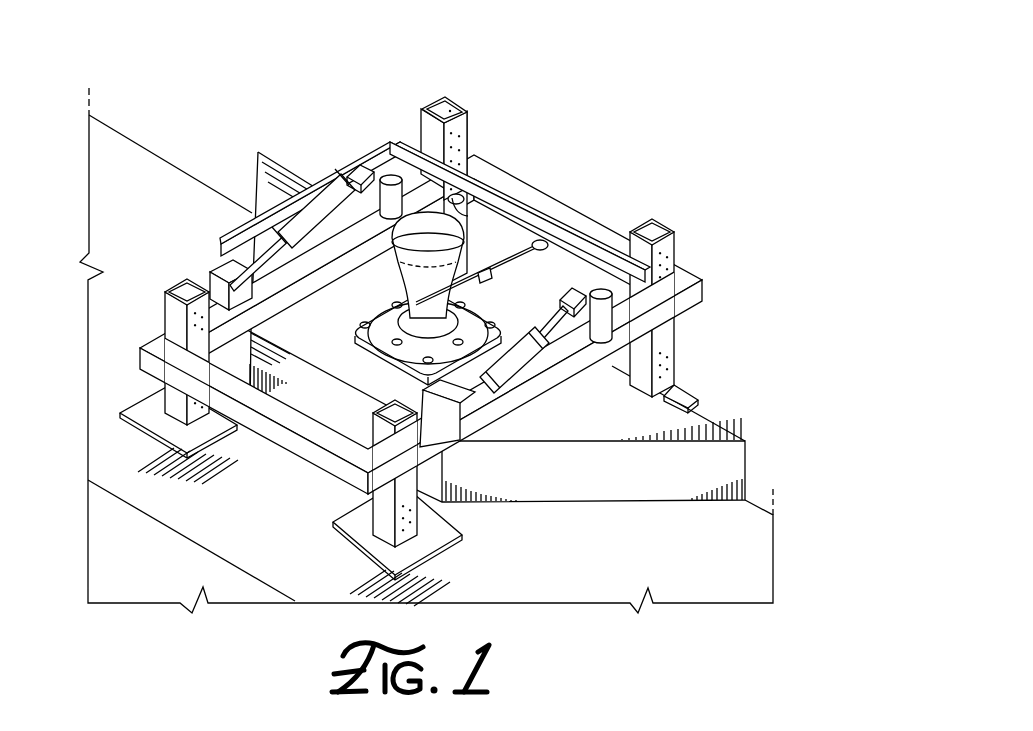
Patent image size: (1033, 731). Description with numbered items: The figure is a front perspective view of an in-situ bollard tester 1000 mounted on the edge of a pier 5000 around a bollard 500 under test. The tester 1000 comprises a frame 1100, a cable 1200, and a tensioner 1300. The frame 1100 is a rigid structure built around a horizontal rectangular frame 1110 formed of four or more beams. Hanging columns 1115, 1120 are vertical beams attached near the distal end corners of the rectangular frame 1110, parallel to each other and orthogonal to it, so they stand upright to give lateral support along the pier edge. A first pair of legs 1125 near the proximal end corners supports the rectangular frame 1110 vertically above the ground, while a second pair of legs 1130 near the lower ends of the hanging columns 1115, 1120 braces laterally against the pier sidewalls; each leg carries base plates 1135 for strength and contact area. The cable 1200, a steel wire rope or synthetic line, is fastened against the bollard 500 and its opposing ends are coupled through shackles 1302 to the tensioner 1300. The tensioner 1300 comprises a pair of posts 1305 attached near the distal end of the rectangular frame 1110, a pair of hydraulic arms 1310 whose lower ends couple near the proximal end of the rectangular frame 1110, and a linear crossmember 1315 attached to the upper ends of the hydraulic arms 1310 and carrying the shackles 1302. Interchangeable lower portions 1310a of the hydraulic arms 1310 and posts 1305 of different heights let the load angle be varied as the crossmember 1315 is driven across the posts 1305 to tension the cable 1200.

The in-situ bollard tester 1000 is at (433, 314).
The frame 1100 is at (408, 311).
The rectangular frame 1110 is at (703, 297).
The hanging column 1115 is at (445, 98).
The hanging column 1120 is at (691, 231).
The leg 1125 is at (163, 313).
The leg 1130 is at (572, 230).
The base plate 1135 is at (152, 405).
The cable 1200 is at (500, 256).
The tensioner 1300 is at (378, 268).
The shackle 1302 is at (462, 208).
The post 1305 is at (388, 198).
The hydraulic arm 1310 is at (282, 244).
The lower portion of hydraulic arm 1310a is at (214, 282).
The linear crossmember 1315 is at (391, 136).
The bollard 500 is at (394, 270).
The pier 5000 is at (660, 560).